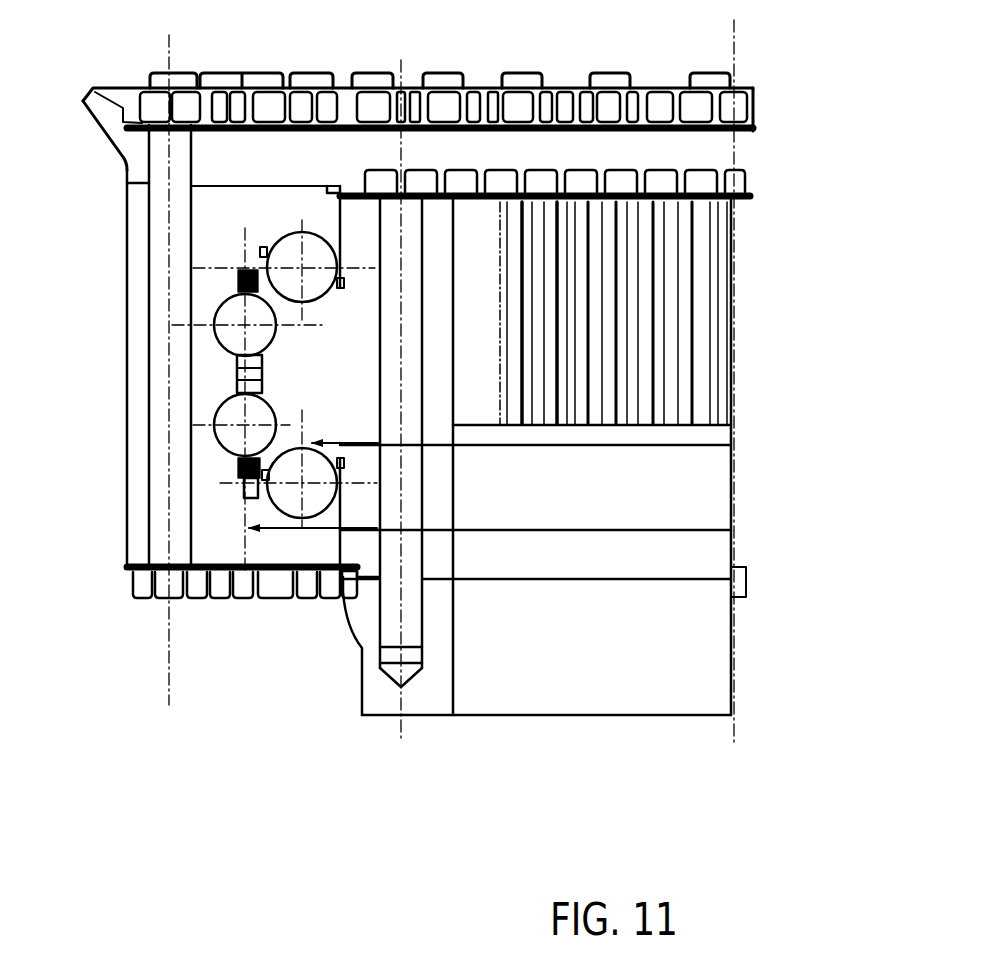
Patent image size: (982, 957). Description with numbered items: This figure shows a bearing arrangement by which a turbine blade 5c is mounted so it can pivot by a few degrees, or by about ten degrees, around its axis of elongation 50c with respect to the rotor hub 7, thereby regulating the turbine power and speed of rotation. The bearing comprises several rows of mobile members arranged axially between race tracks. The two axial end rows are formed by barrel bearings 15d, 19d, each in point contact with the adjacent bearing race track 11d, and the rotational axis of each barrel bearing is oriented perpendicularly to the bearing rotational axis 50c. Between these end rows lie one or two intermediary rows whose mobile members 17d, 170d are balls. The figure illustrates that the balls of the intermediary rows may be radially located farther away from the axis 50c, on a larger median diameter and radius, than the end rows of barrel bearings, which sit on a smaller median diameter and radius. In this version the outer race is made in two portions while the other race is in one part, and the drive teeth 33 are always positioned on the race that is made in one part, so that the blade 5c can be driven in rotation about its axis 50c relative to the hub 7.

The rotor hub 7 is at (710, 152).
The drive teeth 33 is at (705, 355).
The axis of elongation 50c is at (733, 503).
The blade 5c is at (425, 700).
The bearing race track 11d is at (128, 500).
The mobile member 15d is at (318, 226).
The mobile member 17d is at (211, 322).
The mobile member 170d is at (213, 408).
The mobile member 19d is at (262, 503).